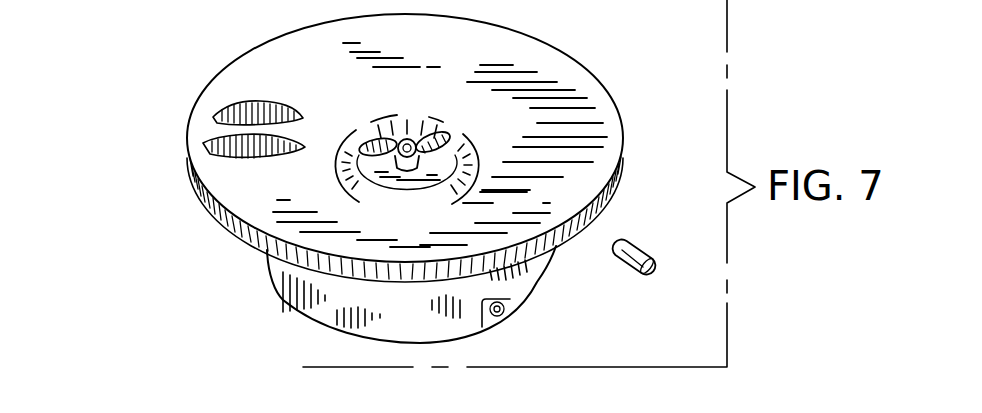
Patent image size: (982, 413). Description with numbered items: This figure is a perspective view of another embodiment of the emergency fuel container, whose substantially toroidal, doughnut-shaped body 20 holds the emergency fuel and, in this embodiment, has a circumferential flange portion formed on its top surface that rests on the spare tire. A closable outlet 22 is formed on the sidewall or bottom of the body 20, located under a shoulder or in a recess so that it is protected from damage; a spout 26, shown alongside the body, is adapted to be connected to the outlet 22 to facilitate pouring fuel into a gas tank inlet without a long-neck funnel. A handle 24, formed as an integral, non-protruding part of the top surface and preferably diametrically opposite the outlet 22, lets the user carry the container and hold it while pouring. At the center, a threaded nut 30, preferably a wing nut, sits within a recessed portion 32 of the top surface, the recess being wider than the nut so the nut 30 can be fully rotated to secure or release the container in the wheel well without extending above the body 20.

The body 20 is at (278, 290).
The closable outlet 22 is at (503, 317).
The handle 24 is at (217, 130).
The spout 26 is at (643, 252).
The threaded nut 30 is at (430, 140).
The recessed portion 32 is at (370, 128).